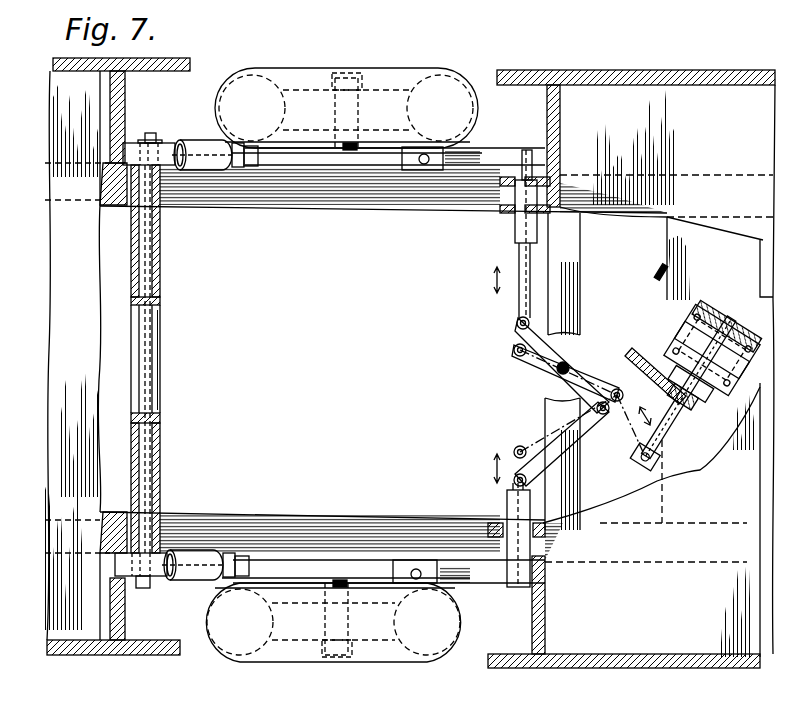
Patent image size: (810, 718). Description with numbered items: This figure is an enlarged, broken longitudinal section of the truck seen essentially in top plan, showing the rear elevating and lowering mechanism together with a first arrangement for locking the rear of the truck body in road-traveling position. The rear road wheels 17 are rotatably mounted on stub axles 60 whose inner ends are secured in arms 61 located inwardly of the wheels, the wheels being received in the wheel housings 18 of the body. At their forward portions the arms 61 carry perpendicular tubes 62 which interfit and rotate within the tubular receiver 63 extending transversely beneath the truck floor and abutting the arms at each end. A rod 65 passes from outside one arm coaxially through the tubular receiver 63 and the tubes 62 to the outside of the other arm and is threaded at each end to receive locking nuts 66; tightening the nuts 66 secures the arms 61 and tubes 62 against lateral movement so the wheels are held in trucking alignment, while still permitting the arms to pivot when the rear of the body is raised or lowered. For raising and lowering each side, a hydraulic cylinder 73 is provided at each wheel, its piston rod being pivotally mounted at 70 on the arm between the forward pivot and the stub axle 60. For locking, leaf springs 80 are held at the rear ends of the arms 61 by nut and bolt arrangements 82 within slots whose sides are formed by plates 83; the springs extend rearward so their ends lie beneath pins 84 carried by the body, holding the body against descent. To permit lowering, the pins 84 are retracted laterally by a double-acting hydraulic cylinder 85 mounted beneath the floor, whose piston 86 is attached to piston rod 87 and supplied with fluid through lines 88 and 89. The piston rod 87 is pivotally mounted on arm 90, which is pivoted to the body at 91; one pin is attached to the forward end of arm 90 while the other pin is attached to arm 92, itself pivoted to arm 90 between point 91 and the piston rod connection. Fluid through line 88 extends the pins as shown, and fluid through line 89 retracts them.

The rear road wheels 17 is at (420, 75).
The wheel housings 18 is at (185, 68).
The stub axles 60 is at (338, 146).
The arms 61 is at (170, 143).
The tubes 62 is at (161, 227).
The tubular receiver 63 is at (163, 270).
The rod 65 is at (151, 133).
The locking nuts 66 is at (140, 143).
The pivot mounting of piston rod 70 is at (246, 170).
The cylinder 73 is at (198, 140).
The leaf springs 80 is at (500, 152).
The nut and bolt arrangements 82 is at (424, 164).
The plates 83 is at (475, 152).
The pins 84 is at (527, 150).
The double-acting hydraulic cylinder 85 is at (733, 302).
The piston 86 is at (705, 405).
The piston rod 87 is at (662, 440).
The line 88 is at (657, 268).
The line 89 is at (634, 348).
The arm 90 is at (540, 325).
The pivot point of arm 91 is at (555, 370).
The arm 92 is at (598, 425).